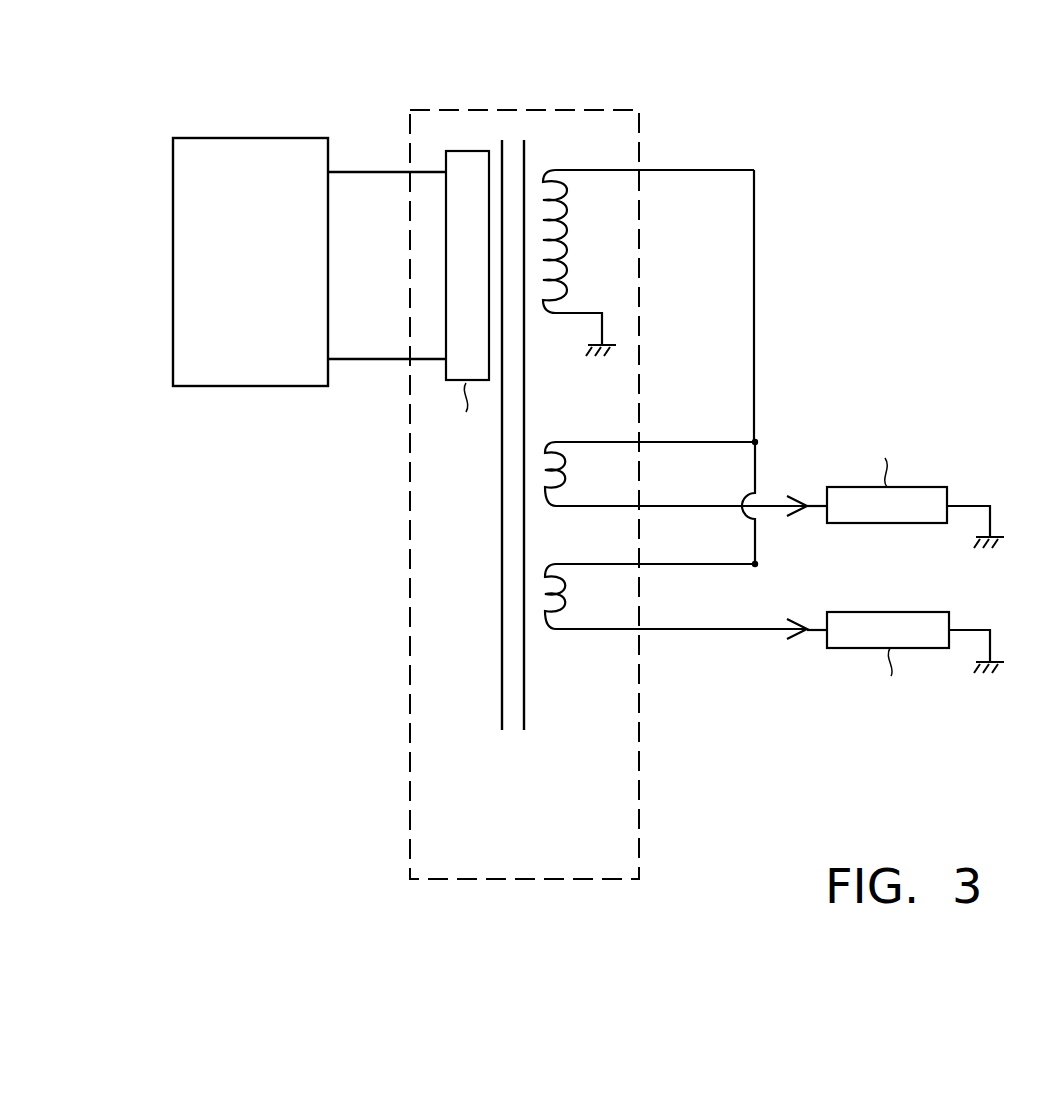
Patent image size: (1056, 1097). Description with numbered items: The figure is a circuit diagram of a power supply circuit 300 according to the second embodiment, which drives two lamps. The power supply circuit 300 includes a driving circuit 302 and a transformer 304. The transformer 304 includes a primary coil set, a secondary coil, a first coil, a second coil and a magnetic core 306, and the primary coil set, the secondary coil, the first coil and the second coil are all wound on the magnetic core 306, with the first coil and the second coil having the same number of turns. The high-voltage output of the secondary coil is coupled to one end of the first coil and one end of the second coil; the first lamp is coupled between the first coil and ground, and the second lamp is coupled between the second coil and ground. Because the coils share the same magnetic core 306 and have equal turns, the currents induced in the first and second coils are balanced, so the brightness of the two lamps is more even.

The power supply circuit 300 is at (1016, 66).
The driving circuit 302 is at (248, 138).
The transformer 304 is at (520, 108).
The magnetic core 306 is at (502, 692).